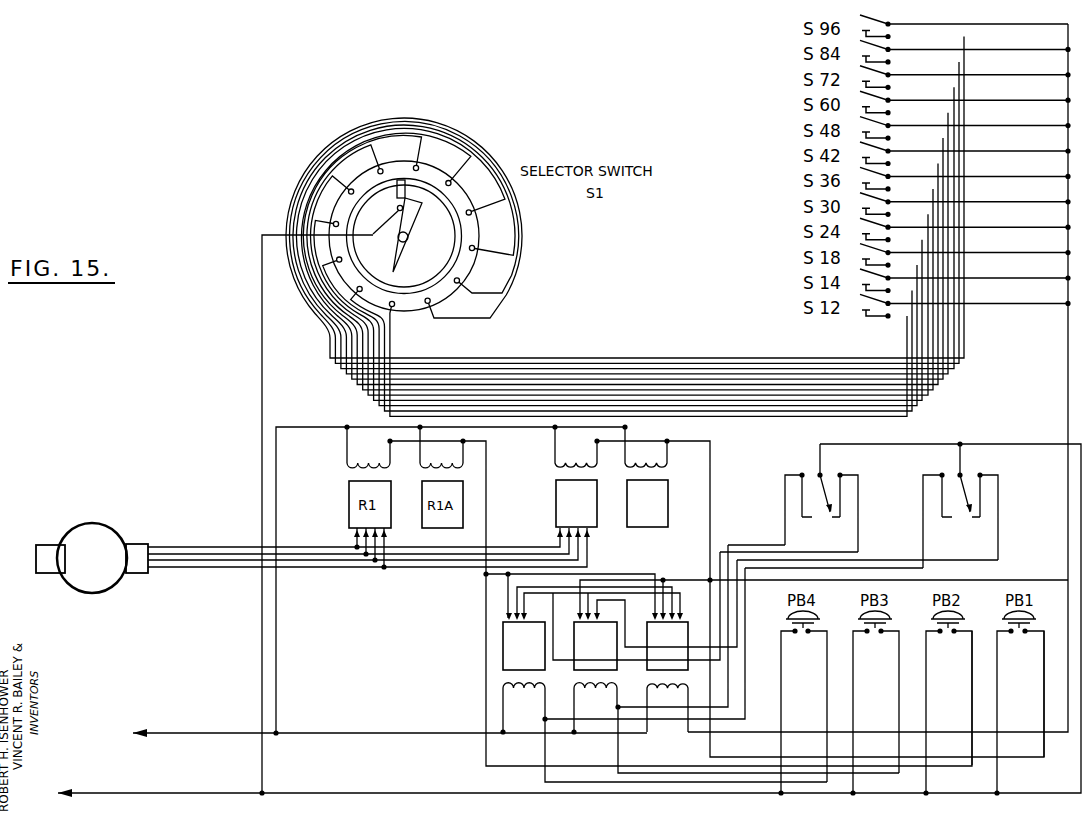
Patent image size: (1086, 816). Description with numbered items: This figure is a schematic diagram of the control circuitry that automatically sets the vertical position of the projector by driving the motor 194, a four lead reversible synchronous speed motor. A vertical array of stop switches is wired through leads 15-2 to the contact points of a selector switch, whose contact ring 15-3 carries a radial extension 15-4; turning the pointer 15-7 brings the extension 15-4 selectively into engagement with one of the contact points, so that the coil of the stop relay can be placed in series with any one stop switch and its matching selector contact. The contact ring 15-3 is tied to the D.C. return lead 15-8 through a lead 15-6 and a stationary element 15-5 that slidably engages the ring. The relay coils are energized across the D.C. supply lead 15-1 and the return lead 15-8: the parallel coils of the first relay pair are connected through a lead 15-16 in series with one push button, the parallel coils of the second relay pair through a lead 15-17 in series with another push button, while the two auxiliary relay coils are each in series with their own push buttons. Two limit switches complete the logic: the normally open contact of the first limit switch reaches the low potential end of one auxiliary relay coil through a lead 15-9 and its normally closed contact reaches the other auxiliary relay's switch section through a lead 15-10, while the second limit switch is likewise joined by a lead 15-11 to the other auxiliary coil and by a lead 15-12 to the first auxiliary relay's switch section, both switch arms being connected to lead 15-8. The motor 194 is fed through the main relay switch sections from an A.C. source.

The D.C. supply lead 15-1 is at (292, 428).
The leads connecting the stop switches with the selector switch 15-2 is at (740, 348).
The contact ring 15-3 is at (444, 214).
The radial extension 15-4 is at (399, 298).
The stationary element 15-5 is at (395, 189).
The lead 15-6 is at (262, 366).
The pointer 15-7 is at (404, 246).
The D.C. return lead 15-8 is at (1023, 444).
The lead 15-9 is at (735, 546).
The lead 15-10 is at (860, 530).
The lead 15-11 is at (912, 568).
The lead 15-12 is at (998, 542).
The lead 15-16 is at (486, 676).
The lead 15-17 is at (710, 494).
The motor 194 is at (92, 558).